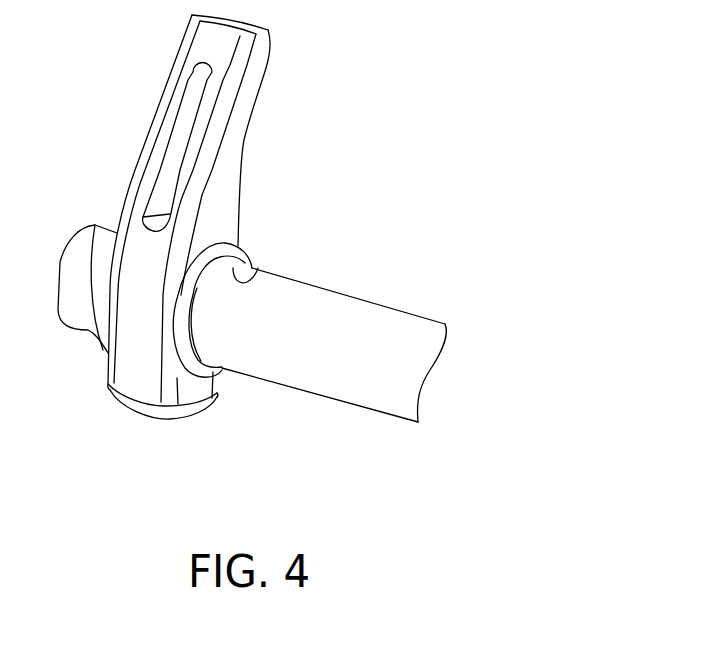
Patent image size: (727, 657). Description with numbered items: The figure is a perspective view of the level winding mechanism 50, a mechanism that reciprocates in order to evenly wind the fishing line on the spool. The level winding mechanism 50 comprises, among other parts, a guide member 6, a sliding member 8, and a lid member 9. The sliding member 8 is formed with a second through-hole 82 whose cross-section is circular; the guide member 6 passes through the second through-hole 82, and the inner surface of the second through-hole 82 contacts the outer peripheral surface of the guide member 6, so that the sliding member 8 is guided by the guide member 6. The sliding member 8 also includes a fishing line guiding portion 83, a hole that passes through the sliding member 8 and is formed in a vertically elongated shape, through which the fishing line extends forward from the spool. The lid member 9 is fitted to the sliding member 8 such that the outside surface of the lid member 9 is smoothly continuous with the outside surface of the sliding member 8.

The level winding mechanism 50 is at (252, 264).
The sliding member 8 is at (190, 209).
The fishing line guiding portion 83 is at (175, 150).
The second through-hole 82 is at (250, 269).
The guide member 6 is at (343, 305).
The lid member 9 is at (162, 420).